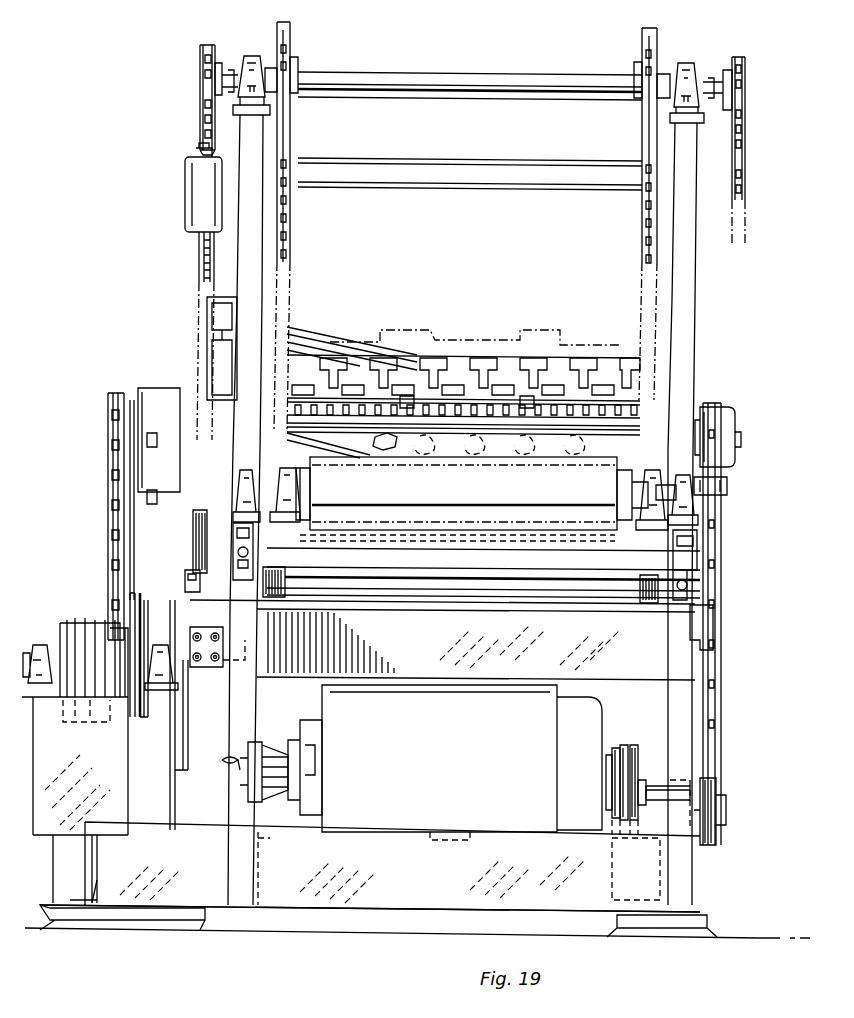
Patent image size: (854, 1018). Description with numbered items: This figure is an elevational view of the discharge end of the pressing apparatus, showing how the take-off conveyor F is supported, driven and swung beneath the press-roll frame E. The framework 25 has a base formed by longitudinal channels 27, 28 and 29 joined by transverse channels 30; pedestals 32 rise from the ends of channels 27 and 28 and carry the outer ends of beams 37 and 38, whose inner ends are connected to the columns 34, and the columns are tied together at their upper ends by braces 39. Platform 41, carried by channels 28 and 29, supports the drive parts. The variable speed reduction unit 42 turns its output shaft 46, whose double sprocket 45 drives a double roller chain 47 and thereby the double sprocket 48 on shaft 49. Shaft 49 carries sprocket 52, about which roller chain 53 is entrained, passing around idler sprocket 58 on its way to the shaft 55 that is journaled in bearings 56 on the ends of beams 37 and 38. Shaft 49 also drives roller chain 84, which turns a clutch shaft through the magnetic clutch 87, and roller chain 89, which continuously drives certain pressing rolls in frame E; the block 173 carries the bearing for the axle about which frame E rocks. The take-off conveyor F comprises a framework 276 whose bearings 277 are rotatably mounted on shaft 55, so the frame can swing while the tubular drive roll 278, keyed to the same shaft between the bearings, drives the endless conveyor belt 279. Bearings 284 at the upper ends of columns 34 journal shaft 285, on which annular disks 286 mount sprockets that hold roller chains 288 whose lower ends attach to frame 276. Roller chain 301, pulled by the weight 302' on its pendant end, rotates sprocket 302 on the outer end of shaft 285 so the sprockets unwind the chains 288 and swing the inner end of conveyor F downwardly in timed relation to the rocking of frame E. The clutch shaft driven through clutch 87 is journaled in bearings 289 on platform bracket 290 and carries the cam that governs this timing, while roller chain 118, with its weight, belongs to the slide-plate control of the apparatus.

The framework 25 is at (158, 886).
The longitudinal channel 27 is at (680, 878).
The longitudinal channel 28 is at (262, 848).
The longitudinal channel 29 is at (92, 882).
The transverse channel 30 is at (372, 916).
The pedestal 32 is at (676, 695).
The column 34 is at (248, 290).
The beam 37 is at (675, 565).
The beam 38 is at (215, 578).
The brace 39 is at (458, 176).
The platform 41 is at (125, 826).
The variable speed reduction unit 42 is at (388, 798).
The double sprocket 45 is at (628, 758).
The output shaft 46 is at (618, 775).
The double roller chain 47 is at (626, 800).
The double sprocket 48 is at (641, 770).
The shaft 49 is at (690, 790).
The sprocket 52 is at (706, 808).
The roller chain 53 is at (722, 610).
The shaft 55 is at (240, 522).
The bearing 56 is at (245, 490).
The idler sprocket 58 is at (720, 489).
The roller chain 84 is at (112, 588).
The magnetic clutch 87 is at (97, 607).
The roller chain 89 is at (110, 510).
The roller chain 118 is at (738, 156).
The block 173 is at (734, 425).
The framework 276 is at (520, 538).
The bearing 277 is at (302, 514).
The tubular drive roll 278 is at (345, 512).
The endless conveyor belt 279 is at (385, 492).
The bearing 284 is at (250, 70).
The shaft 285 is at (428, 83).
The annular disk 286 is at (296, 72).
The roller chain 288 is at (293, 124).
The bearing 289 is at (46, 648).
The platform bracket 290 is at (70, 826).
The roller chain 301 is at (201, 256).
The sprocket 302 is at (197, 100).
The weight 302' is at (176, 187).
The press-roll frame E is at (417, 337).
The take-off conveyor F is at (460, 470).